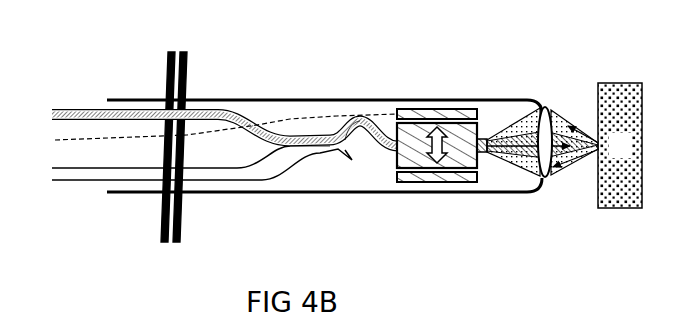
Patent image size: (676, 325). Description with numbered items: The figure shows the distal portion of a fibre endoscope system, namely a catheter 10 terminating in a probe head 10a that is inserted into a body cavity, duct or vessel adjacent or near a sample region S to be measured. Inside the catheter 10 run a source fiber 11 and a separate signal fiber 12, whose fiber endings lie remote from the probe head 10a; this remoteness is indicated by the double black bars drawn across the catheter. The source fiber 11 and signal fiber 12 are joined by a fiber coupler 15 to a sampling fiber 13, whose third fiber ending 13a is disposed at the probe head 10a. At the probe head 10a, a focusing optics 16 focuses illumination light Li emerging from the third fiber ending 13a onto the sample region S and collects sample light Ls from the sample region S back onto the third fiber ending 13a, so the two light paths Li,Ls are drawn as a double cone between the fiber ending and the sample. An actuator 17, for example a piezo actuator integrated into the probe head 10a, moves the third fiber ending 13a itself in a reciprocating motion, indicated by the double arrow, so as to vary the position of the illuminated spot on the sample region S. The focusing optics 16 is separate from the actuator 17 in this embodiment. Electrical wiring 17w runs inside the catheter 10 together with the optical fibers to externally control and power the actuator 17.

The catheter 10 is at (147, 97).
The probe head 10a is at (319, 208).
The source fiber 11 is at (80, 106).
The signal fiber 12 is at (80, 184).
The sampling fiber 13 is at (363, 114).
The third fiber ending 13a is at (487, 163).
The fiber coupler 15 is at (310, 129).
The focusing optics 16 is at (548, 107).
The actuator 17 is at (431, 105).
The electrical wiring 17w is at (213, 133).
The illumination light and sample light Li,Ls is at (582, 174).
The sample region S is at (612, 157).